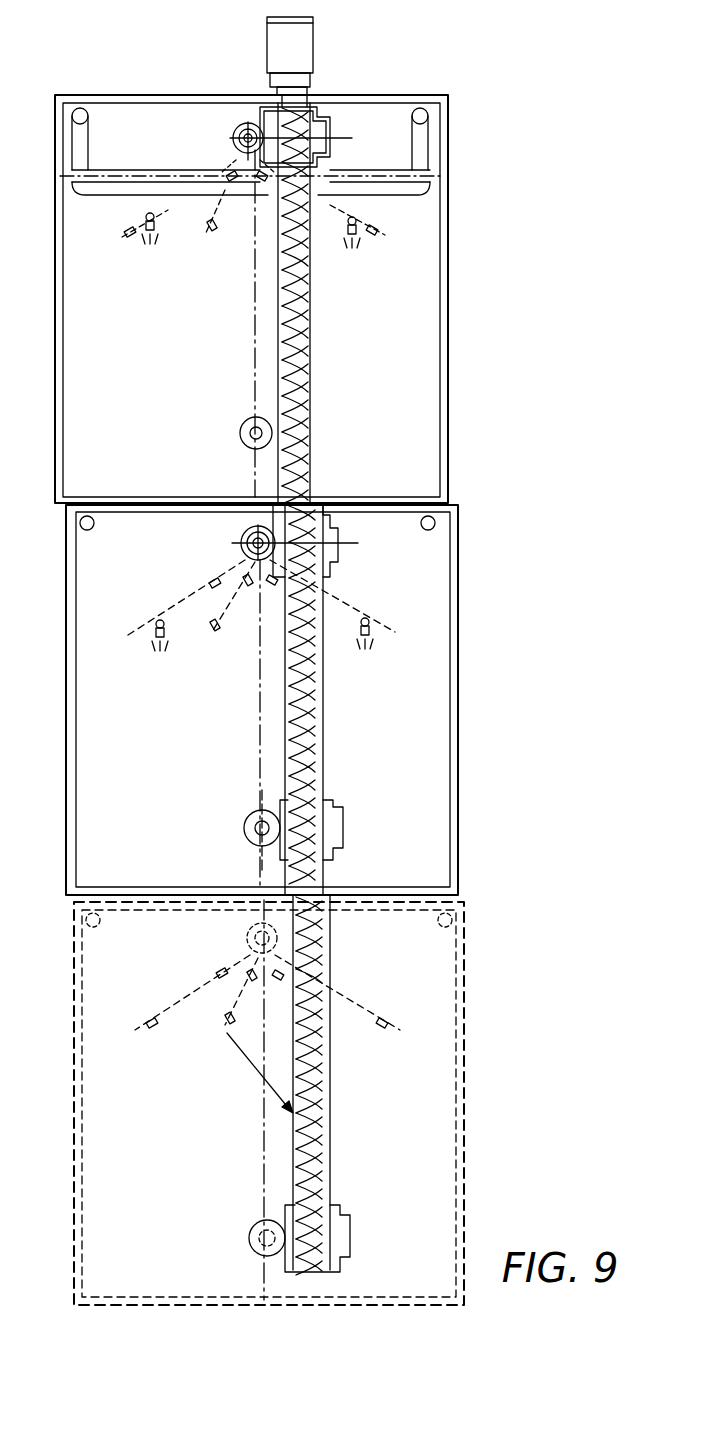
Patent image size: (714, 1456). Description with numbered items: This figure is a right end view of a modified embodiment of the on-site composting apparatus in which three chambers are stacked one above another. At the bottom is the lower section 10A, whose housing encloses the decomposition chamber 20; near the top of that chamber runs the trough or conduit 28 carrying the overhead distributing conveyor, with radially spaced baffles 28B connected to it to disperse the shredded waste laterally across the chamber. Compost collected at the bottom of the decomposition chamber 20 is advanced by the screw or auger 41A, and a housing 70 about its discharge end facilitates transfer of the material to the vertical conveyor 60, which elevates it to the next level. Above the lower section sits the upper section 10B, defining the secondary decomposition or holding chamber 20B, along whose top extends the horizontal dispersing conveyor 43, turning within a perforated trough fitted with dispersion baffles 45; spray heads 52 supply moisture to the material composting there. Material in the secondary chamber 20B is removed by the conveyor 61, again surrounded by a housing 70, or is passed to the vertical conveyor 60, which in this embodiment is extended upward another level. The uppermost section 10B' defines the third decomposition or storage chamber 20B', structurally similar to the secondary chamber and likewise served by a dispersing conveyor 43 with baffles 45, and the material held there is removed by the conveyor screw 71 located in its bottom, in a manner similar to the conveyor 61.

The upper module housing 10B' is at (302, 299).
The third decomposition or storage chamber 20B' is at (296, 300).
The spray heads 52 is at (148, 238).
The dispersion baffles 45 is at (167, 200).
The conveyor screw 71 is at (240, 436).
The dispersing conveyor 43 is at (241, 540).
The upper section 10B is at (303, 700).
The secondary decomposition or holding chamber 20B is at (293, 699).
The conveyor 61 is at (244, 821).
The housing 70 is at (268, 805).
The baffles 28B is at (185, 998).
The trough or conduit 28 is at (348, 997).
The vertical conveyor 60 is at (320, 1109).
The decomposition chamber 20 is at (145, 1187).
The screw or auger 41A is at (252, 1250).
The lower section 10A is at (462, 1160).